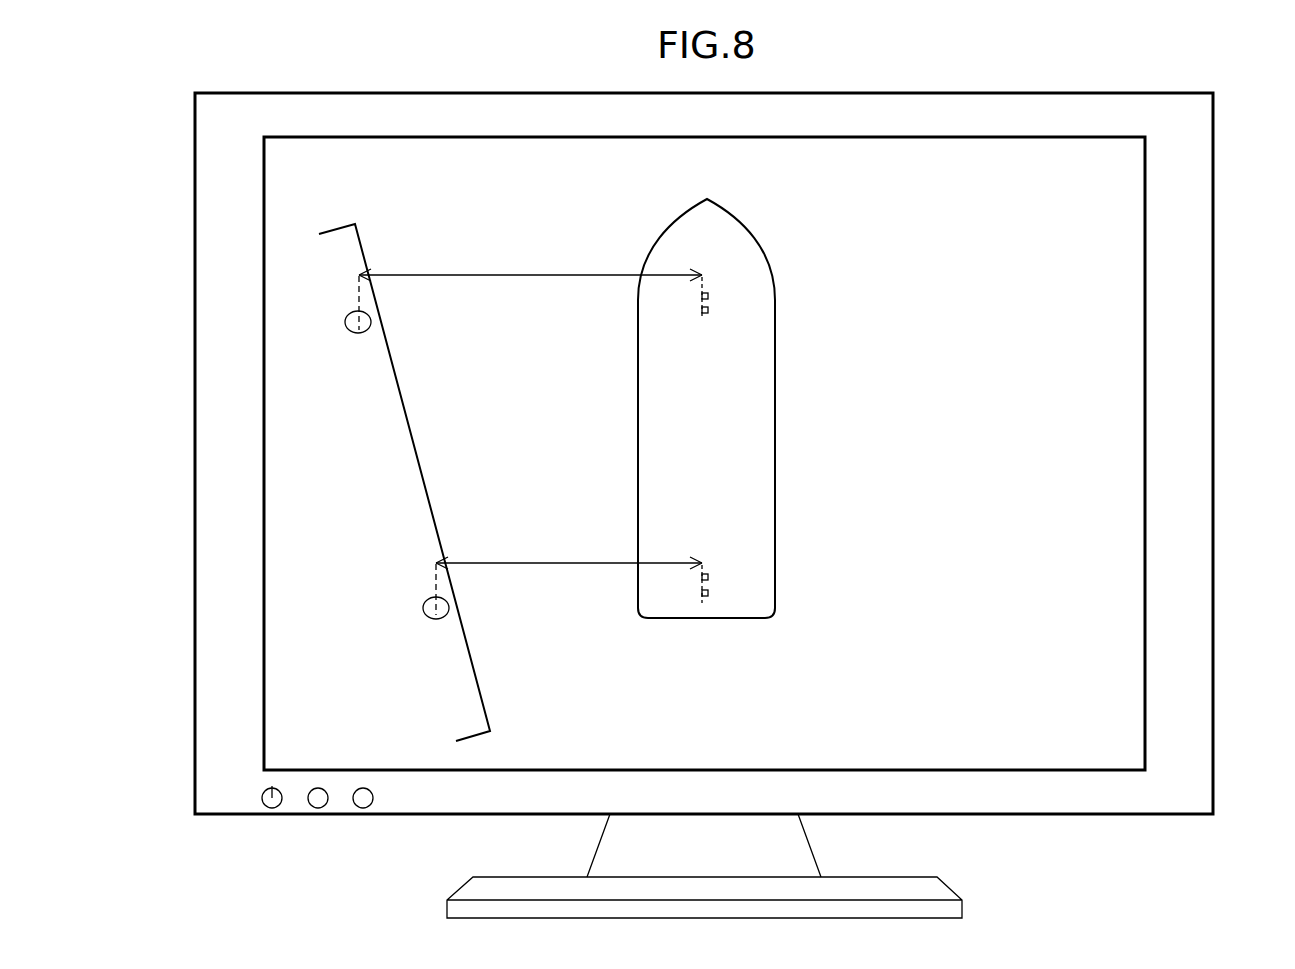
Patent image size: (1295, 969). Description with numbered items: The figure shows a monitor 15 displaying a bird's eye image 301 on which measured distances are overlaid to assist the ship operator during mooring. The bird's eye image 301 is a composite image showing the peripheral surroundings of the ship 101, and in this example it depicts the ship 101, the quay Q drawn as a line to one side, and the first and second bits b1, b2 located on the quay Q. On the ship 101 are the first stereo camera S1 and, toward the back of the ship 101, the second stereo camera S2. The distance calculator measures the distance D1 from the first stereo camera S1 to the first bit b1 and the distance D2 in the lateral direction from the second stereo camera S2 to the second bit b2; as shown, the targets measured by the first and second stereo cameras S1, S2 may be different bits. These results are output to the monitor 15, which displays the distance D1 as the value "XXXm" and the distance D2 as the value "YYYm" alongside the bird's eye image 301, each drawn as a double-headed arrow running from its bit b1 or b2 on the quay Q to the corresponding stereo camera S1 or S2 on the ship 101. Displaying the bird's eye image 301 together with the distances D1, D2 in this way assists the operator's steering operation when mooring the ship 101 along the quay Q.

The monitor 15 is at (228, 264).
The bird's eye image 301 is at (1102, 460).
The ship 101 is at (758, 445).
The quay Q is at (350, 242).
The first bit b1 is at (355, 334).
The second bit b2 is at (432, 622).
The distance D1 is at (469, 278).
The distance D2 is at (519, 566).
The first stereo camera S1 is at (715, 303).
The second stereo camera S2 is at (715, 581).